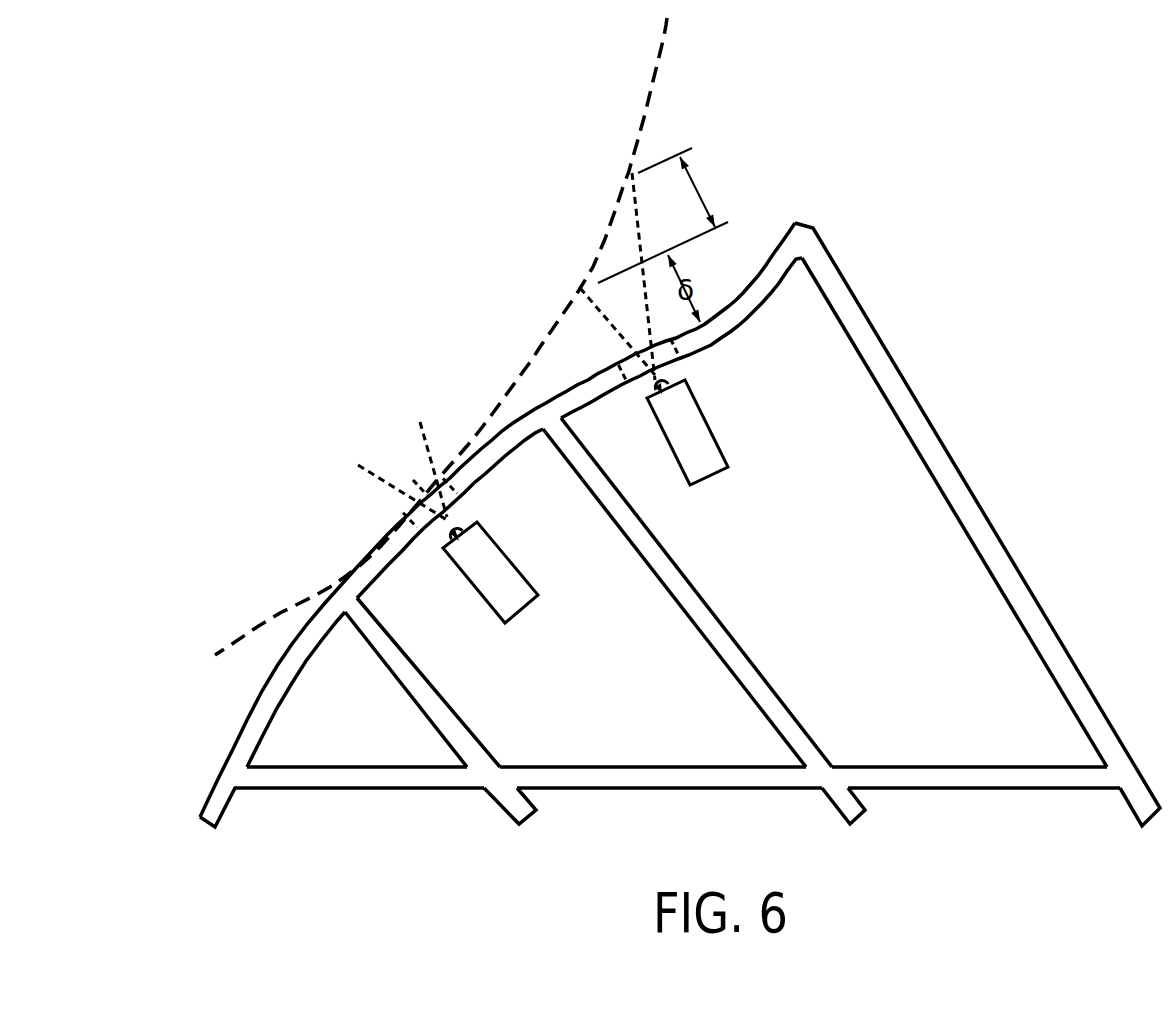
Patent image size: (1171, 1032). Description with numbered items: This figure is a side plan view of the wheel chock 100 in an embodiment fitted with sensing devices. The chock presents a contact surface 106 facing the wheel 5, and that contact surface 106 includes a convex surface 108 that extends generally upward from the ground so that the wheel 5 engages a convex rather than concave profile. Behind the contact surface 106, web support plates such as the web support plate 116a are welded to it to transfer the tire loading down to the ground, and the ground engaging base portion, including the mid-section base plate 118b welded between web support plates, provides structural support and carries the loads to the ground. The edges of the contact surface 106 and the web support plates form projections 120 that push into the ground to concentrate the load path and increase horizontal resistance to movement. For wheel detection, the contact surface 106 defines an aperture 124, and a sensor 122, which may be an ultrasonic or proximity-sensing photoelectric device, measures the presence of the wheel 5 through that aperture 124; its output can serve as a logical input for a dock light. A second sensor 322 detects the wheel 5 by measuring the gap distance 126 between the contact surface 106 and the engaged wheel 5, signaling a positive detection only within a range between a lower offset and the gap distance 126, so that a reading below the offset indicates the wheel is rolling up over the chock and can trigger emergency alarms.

The wheel 5 is at (663, 56).
The wheel chock 100 is at (1114, 138).
The contact surface 106 is at (405, 368).
The convex surface 108 is at (280, 660).
The web support plate 116a is at (976, 485).
The mid-section base plate 118b is at (582, 788).
The projection 120 is at (510, 818).
The sensor 122 is at (508, 552).
The aperture 124 is at (410, 512).
The gap distance 126 is at (699, 193).
The sensor 322 is at (707, 418).